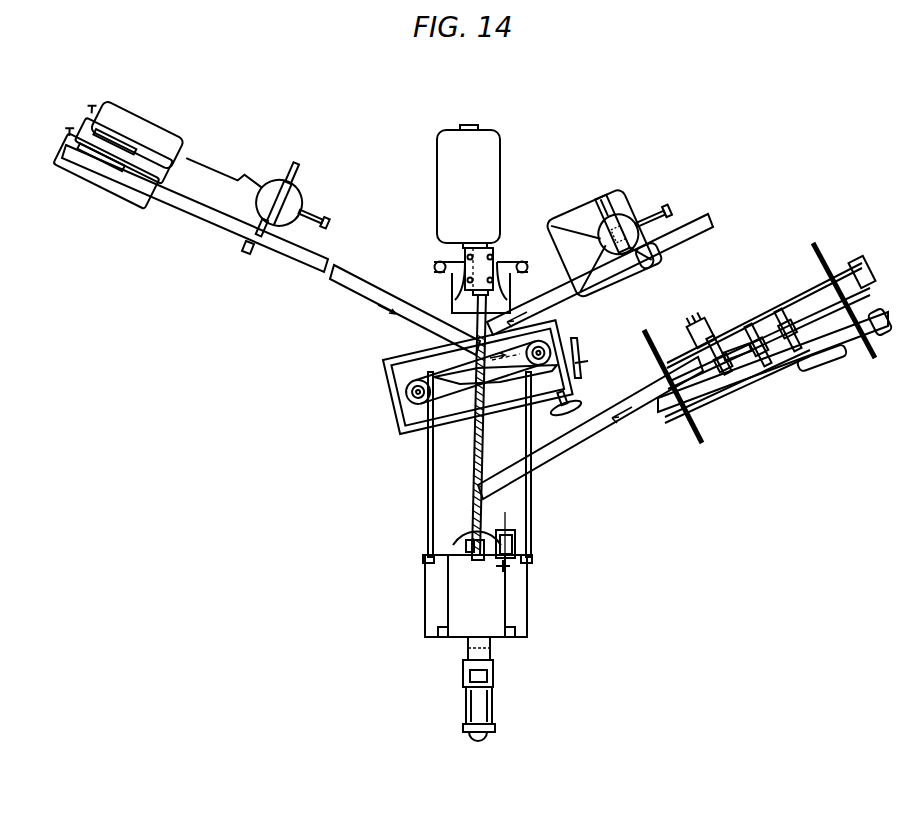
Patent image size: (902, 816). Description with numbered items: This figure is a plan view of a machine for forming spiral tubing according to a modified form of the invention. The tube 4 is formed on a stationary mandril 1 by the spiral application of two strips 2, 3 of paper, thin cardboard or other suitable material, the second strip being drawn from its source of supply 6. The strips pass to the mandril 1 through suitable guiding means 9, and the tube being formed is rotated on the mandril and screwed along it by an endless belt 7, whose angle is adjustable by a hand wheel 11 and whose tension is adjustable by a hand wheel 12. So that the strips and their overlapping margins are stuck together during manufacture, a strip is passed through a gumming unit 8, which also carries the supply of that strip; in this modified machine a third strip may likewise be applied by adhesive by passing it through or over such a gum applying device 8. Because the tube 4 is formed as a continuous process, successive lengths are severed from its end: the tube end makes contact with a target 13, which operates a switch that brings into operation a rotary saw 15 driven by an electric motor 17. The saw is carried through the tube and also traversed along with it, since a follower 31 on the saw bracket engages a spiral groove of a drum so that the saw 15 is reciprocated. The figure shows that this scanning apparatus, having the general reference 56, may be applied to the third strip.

The stationary mandril 1 is at (486, 311).
The strip 2 is at (690, 229).
The strip 3 is at (347, 275).
The tube 4 is at (474, 462).
The source of supply 6 is at (294, 199).
The endless belt 7 is at (430, 365).
The gumming unit 8 is at (163, 163).
The guiding means 9 is at (640, 269).
The hand wheel 11 is at (578, 400).
The hand wheel 12 is at (583, 365).
The target 13 is at (489, 661).
The rotary saw 15 is at (505, 567).
The electric motor 17 is at (515, 540).
The follower 31 is at (614, 419).
The scanning apparatus 56 is at (768, 343).